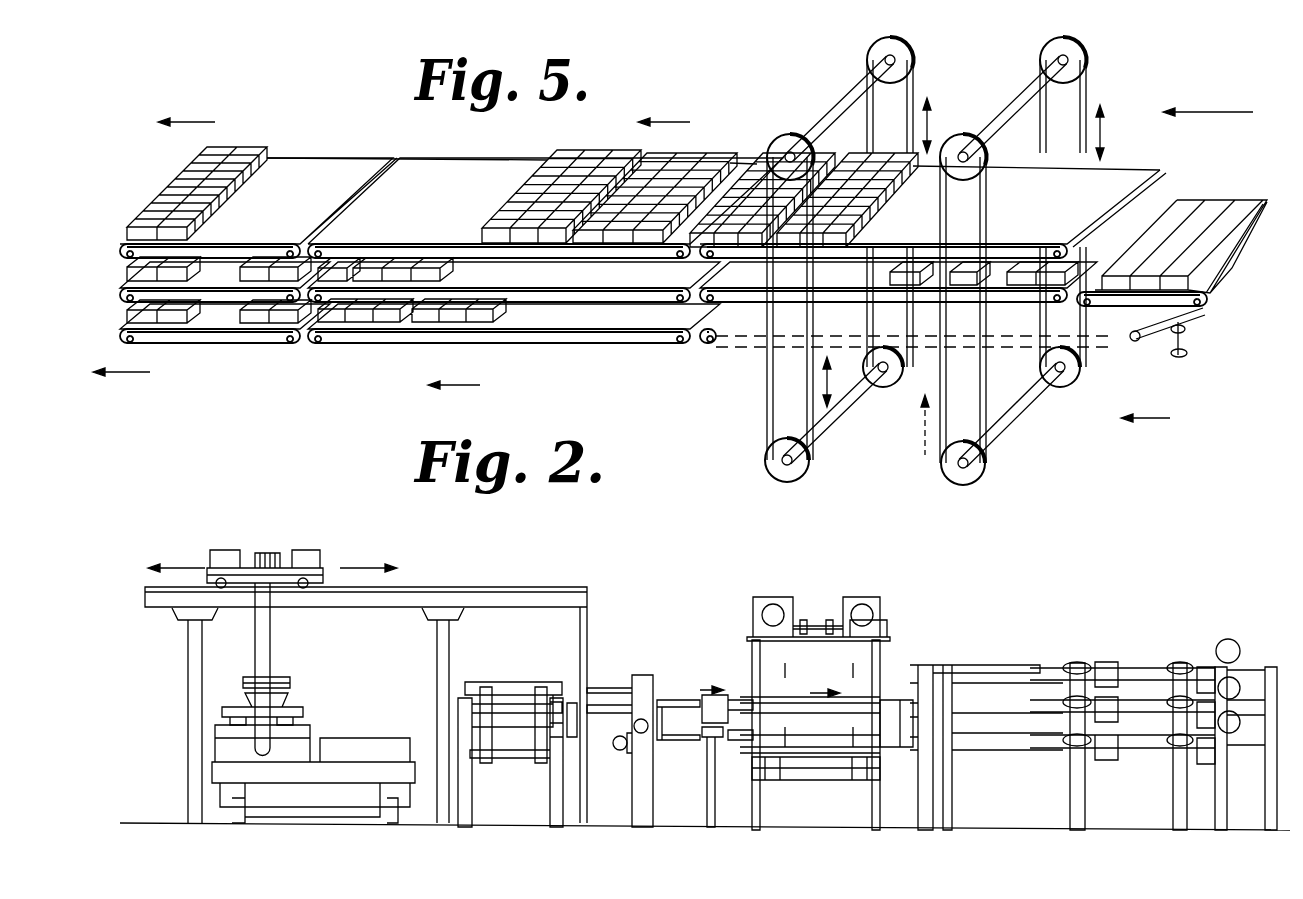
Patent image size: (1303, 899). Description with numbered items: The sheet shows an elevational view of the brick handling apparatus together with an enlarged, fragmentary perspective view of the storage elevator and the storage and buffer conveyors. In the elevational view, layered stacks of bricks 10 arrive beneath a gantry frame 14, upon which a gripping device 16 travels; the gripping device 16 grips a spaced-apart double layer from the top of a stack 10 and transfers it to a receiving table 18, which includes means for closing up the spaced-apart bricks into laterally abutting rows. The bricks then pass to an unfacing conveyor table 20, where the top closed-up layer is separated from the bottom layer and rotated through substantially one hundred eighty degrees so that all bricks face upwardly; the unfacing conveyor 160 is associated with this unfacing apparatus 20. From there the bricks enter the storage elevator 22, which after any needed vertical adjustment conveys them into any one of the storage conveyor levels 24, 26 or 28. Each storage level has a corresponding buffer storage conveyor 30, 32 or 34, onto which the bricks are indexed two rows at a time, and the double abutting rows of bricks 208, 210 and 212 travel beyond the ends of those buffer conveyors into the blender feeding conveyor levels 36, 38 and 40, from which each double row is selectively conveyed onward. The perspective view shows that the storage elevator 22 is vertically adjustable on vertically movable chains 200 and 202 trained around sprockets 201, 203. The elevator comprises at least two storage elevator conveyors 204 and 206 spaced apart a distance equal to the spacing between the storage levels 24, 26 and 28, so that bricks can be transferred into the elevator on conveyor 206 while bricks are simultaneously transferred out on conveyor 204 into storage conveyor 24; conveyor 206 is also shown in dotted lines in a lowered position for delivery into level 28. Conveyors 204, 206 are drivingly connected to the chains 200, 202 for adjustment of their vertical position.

In FIG. 2, the layered stacks of bricks 10 is at (301, 763).
In FIG. 2, the gantry frame 14 is at (530, 590).
In FIG. 2, the gripping device 16 is at (306, 708).
In FIG. 2, the receiving table 18 is at (513, 675).
In FIG. 5, the unfacing conveyor table 20 is at (1226, 176).
In FIG. 2, the unfacing conveyor table 20 is at (677, 667).
In FIG. 5, the storage elevator 22 is at (933, 280).
In FIG. 2, the storage elevator 22 is at (817, 597).
In FIG. 5, the storage conveyor level 24 is at (452, 209).
In FIG. 2, the storage conveyor level 24 is at (1033, 666).
In FIG. 5, the storage conveyor level 26 is at (585, 290).
In FIG. 2, the storage conveyor level 26 is at (985, 700).
In FIG. 5, the storage conveyor level 28 is at (575, 330).
In FIG. 2, the storage conveyor level 28 is at (1040, 730).
In FIG. 5, the buffer storage conveyor area 30 is at (284, 233).
In FIG. 2, the buffer storage conveyor area 30 is at (1135, 668).
In FIG. 5, the buffer storage conveyor area 32 is at (225, 281).
In FIG. 2, the buffer storage conveyor area 32 is at (1122, 704).
In FIG. 5, the buffer storage conveyor area 34 is at (225, 323).
In FIG. 2, the buffer storage conveyor area 34 is at (1122, 739).
In FIG. 2, the blender feeding conveyor level 36 is at (1246, 721).
In FIG. 2, the blender feeding conveyor level 38 is at (1243, 692).
In FIG. 2, the blender feeding conveyor level 40 is at (1238, 735).
In FIG. 5, the unfacing conveyor 160 is at (1118, 312).
In FIG. 5, the vertically movable chain 200 is at (1051, 261).
In FIG. 5, the sprocket 201 is at (972, 157).
In FIG. 5, the vertically movable chain 202 is at (745, 433).
In FIG. 5, the sprocket 203 is at (792, 134).
In FIG. 5, the storage elevator conveyor 204 is at (1071, 222).
In FIG. 5, the storage elevator conveyor 206 is at (868, 292).
In FIG. 5, the double abutting rows of bricks 208 is at (128, 232).
In FIG. 5, the double abutting rows of bricks 210 is at (128, 276).
In FIG. 5, the double abutting rows of bricks 212 is at (128, 319).